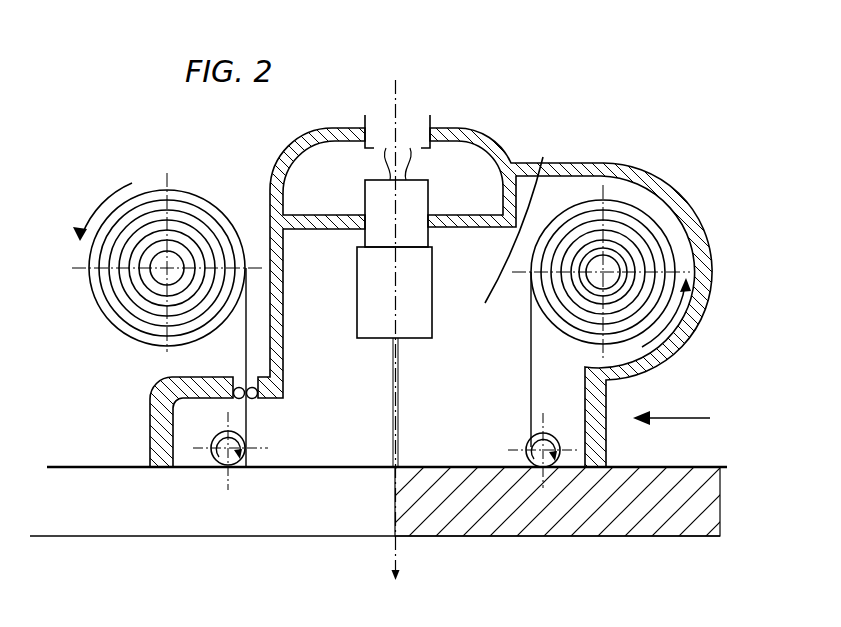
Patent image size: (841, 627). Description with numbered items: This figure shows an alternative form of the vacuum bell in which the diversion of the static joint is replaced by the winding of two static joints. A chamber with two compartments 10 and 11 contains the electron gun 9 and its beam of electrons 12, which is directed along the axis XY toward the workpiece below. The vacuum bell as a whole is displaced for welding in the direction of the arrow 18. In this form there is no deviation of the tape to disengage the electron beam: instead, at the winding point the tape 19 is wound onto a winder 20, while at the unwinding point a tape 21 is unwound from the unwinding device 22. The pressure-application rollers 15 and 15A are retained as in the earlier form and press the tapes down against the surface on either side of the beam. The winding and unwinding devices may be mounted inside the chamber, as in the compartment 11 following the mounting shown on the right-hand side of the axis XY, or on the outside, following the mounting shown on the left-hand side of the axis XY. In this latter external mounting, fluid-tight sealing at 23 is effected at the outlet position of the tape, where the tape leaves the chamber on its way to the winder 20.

The electron gun 9 is at (416, 192).
The compartment 10 is at (477, 182).
The compartment 11 is at (406, 302).
The beam of electrons 12 is at (404, 437).
The pressure-application roller 15 is at (230, 467).
The pressure-application roller 15A is at (538, 468).
The arrow 18 is at (675, 409).
The tape 19 is at (104, 480).
The winder 20 is at (152, 185).
The tape 21 is at (643, 478).
The unwinding device 22 is at (607, 250).
The fluid-tight sealing 23 is at (257, 398).